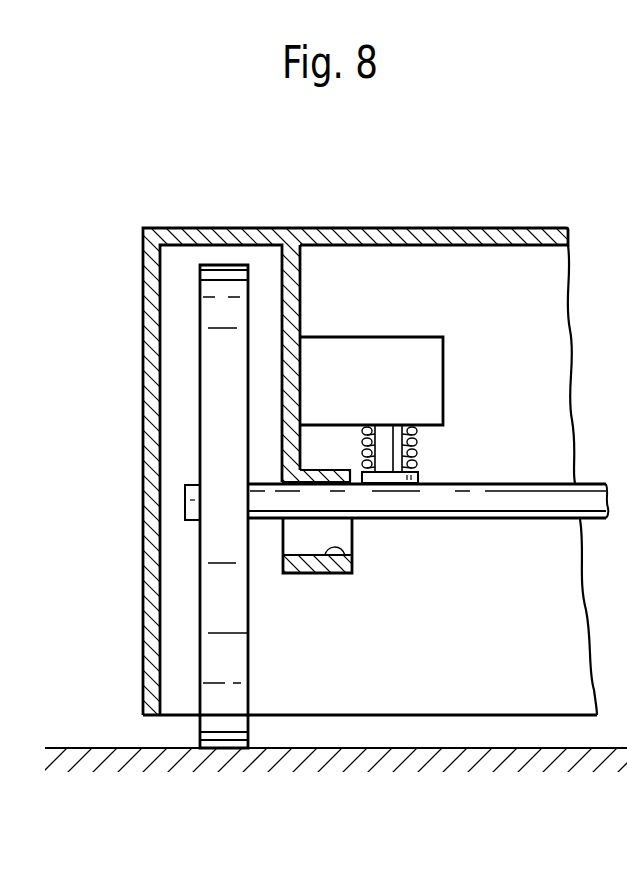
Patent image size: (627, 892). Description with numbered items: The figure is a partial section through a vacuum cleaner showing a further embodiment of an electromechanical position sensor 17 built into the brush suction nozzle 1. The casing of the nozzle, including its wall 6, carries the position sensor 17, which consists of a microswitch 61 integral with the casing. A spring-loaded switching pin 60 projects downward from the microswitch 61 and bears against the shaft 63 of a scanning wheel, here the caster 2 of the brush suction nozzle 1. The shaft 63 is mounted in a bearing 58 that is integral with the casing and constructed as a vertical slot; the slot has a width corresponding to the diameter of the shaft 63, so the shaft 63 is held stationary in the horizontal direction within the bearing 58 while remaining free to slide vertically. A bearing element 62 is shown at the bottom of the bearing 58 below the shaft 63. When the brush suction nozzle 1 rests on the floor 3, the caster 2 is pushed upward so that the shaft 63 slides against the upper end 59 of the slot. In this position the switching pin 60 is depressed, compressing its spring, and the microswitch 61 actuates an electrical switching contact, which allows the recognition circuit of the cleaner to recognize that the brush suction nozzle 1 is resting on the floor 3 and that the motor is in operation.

The brush suction nozzle 1 is at (359, 220).
The caster 2 is at (225, 726).
The floor 3 is at (503, 750).
The housing 6 is at (510, 236).
The position sensor 17 is at (380, 328).
The bearing 58 is at (312, 575).
The upper end of the slot 59 is at (346, 486).
The switching pin 60 is at (420, 448).
The microswitch 61 is at (428, 373).
The bearing element 62 is at (337, 573).
The shaft 63 is at (513, 500).